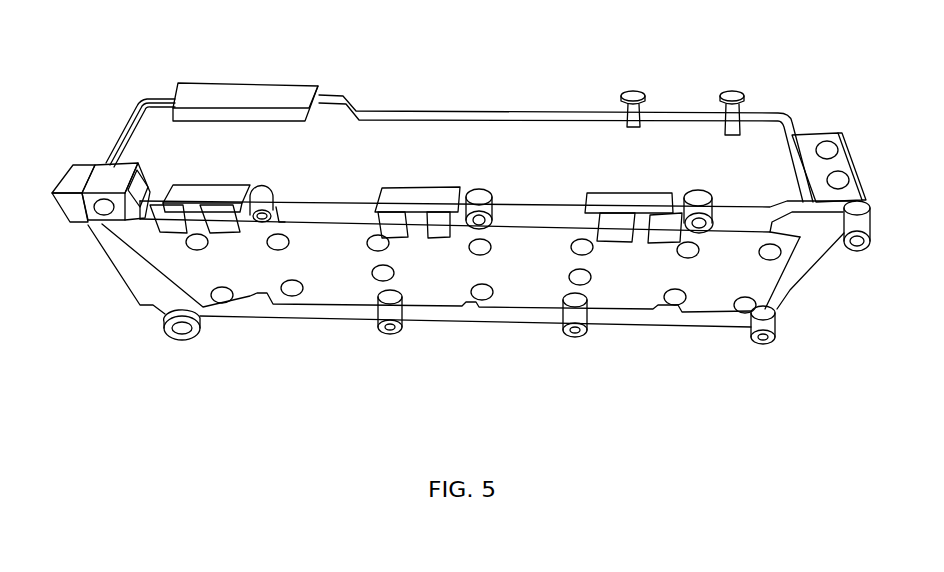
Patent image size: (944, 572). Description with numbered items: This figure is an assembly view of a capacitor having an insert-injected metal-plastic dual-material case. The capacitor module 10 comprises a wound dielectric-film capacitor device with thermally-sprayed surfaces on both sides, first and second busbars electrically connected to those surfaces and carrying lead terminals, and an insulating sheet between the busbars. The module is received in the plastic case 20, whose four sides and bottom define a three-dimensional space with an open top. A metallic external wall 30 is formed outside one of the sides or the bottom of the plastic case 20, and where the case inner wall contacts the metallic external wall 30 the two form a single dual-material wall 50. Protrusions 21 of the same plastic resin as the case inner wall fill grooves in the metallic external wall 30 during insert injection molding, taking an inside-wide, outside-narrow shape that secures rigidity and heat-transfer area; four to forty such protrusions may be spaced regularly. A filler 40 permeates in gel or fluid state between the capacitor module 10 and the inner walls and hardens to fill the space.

The capacitor module 10 is at (257, 95).
The plastic case 20 is at (317, 207).
The protrusion 21 is at (583, 279).
The metallic external wall 30 is at (479, 302).
The filler 40 is at (458, 145).
The dual-material wall 50 is at (479, 319).